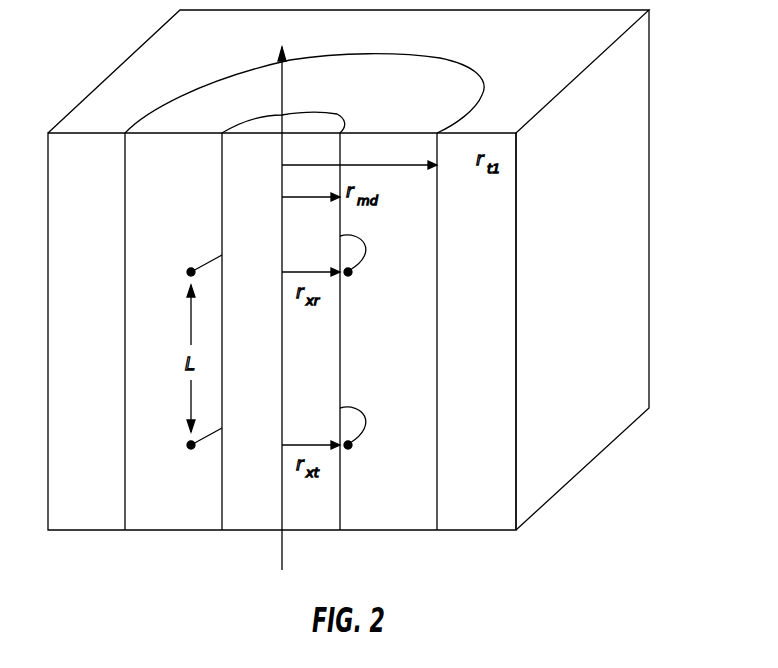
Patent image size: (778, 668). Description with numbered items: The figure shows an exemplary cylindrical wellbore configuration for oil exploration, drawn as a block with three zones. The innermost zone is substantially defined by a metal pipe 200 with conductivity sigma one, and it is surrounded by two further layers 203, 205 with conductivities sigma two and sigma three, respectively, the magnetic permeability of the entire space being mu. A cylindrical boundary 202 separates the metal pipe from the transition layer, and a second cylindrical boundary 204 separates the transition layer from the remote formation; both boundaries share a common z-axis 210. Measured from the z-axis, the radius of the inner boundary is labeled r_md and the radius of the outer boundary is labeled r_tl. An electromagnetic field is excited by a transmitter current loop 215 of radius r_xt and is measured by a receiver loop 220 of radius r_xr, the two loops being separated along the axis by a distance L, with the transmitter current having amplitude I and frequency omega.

The metal pipe 200 is at (310, 531).
The cylindrical boundary 202 is at (337, 114).
The transition layer 203 is at (390, 531).
The cylindrical boundary 204 is at (412, 58).
The remote formation layer 205 is at (480, 531).
The z-axis 210 is at (281, 66).
The transmitter current loop 215 is at (189, 445).
The receiver loop 220 is at (189, 272).